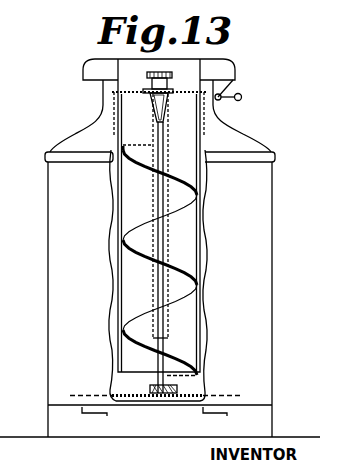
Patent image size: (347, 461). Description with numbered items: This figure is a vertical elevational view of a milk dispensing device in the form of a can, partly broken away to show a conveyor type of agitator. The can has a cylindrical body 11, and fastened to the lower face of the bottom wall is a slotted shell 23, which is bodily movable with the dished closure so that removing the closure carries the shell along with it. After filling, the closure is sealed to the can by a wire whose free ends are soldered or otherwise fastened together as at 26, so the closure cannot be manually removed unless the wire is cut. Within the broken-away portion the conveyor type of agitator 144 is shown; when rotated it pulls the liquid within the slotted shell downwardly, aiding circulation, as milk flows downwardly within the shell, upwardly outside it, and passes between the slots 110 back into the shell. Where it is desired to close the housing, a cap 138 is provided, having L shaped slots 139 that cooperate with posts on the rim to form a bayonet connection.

The cylindrical body 11 is at (272, 322).
The slotted shell 23 is at (203, 353).
The fastened wire ends 26 is at (242, 96).
The slots 110 is at (168, 325).
The cap 138 is at (67, 422).
The L shaped slots 139 is at (108, 415).
The auger screw 144 is at (190, 196).